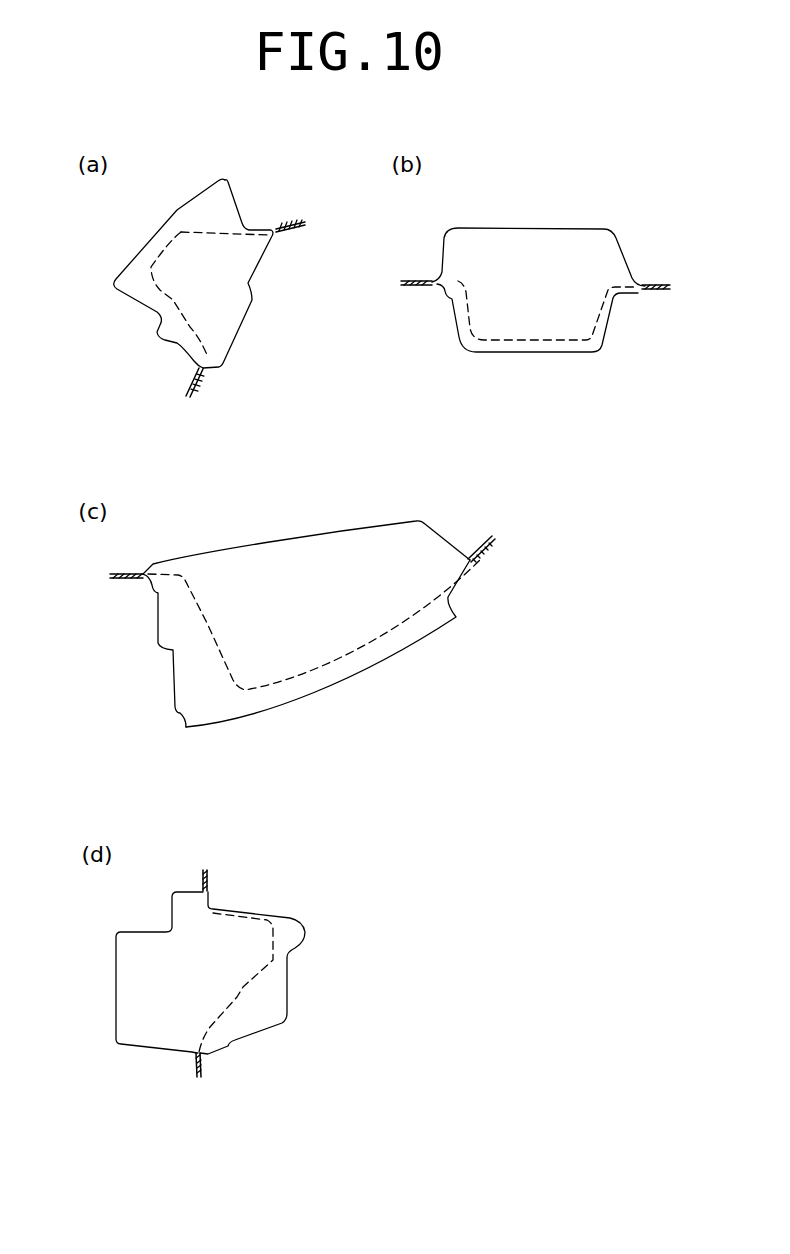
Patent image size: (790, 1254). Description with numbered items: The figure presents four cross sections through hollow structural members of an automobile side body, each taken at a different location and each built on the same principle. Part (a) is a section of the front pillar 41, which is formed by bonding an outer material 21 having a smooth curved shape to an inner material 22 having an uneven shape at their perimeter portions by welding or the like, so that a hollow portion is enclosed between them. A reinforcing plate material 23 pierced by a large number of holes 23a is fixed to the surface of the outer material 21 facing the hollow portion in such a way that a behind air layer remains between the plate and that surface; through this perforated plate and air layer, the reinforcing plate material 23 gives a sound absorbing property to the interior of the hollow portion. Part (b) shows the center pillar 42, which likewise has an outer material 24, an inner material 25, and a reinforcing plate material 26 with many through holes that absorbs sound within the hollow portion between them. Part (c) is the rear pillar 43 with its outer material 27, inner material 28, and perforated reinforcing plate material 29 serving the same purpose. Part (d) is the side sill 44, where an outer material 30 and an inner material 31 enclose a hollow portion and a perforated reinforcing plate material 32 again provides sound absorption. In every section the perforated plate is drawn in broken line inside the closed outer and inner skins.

The outer material 21 is at (176, 212).
The inner material 22 is at (253, 318).
The reinforcing plate material 23 is at (201, 232).
The holes 23a is at (168, 290).
The outer material 24 is at (543, 357).
The inner material 25 is at (530, 227).
The reinforcing plate material 26 is at (527, 338).
The outer material 27 is at (359, 678).
The inner material 28 is at (290, 533).
The reinforcing plate material 29 is at (337, 660).
The outer material 30 is at (291, 976).
The inner material 31 is at (148, 930).
The reinforcing plate material 32 is at (238, 996).
The front pillar 41 is at (263, 190).
The center pillar 42 is at (607, 200).
The rear pillar 43 is at (377, 512).
The side sill 44 is at (293, 890).